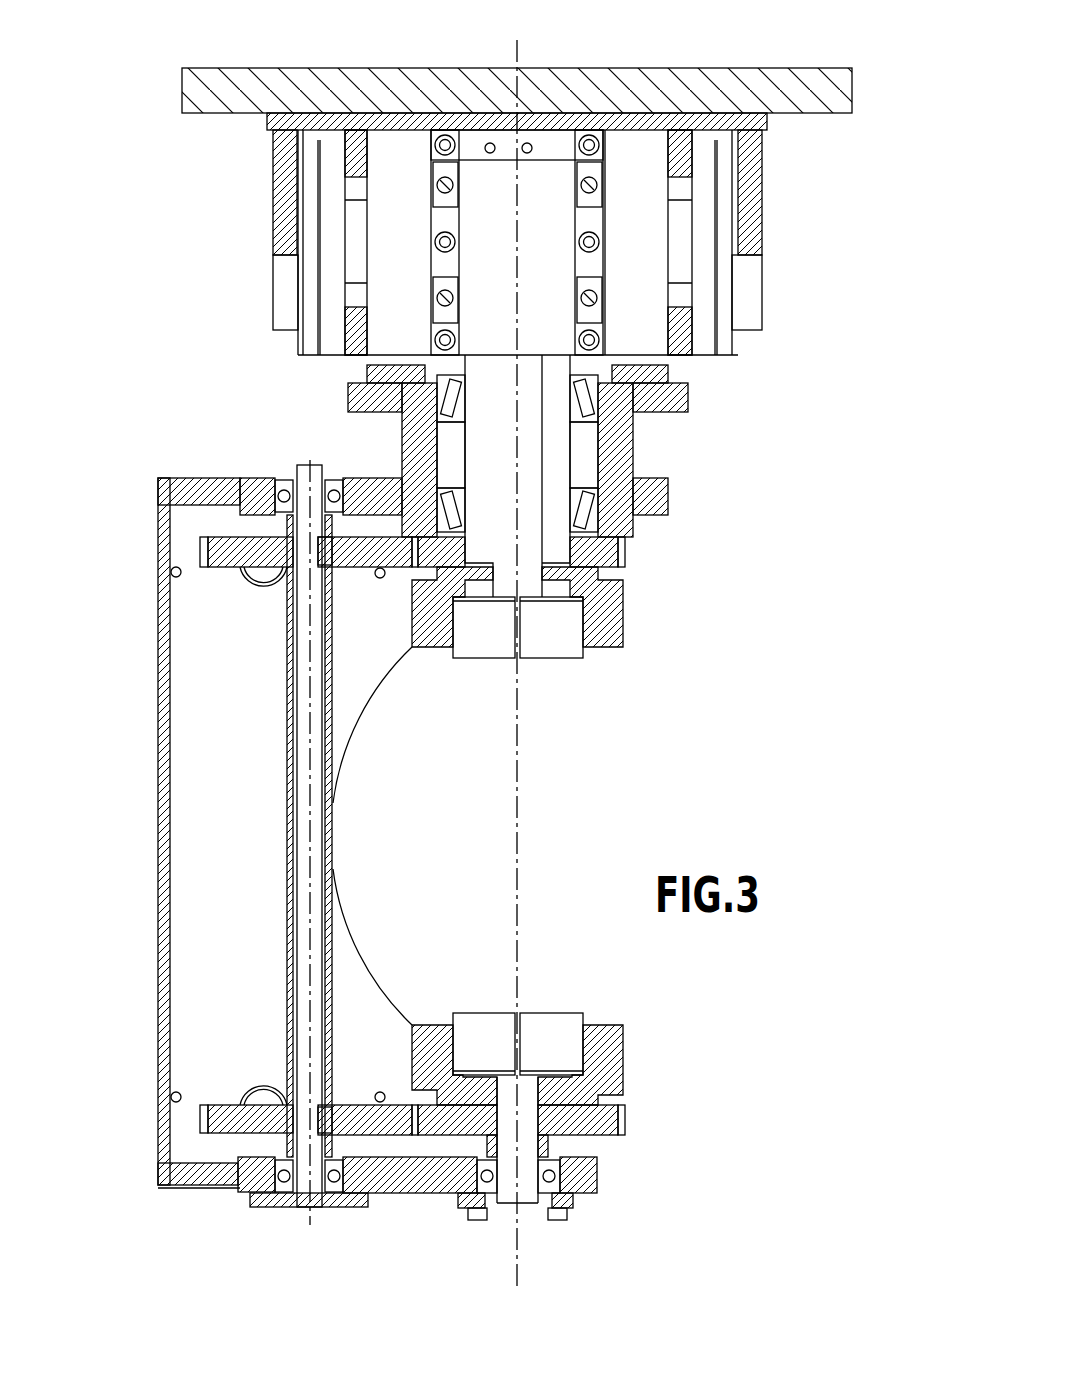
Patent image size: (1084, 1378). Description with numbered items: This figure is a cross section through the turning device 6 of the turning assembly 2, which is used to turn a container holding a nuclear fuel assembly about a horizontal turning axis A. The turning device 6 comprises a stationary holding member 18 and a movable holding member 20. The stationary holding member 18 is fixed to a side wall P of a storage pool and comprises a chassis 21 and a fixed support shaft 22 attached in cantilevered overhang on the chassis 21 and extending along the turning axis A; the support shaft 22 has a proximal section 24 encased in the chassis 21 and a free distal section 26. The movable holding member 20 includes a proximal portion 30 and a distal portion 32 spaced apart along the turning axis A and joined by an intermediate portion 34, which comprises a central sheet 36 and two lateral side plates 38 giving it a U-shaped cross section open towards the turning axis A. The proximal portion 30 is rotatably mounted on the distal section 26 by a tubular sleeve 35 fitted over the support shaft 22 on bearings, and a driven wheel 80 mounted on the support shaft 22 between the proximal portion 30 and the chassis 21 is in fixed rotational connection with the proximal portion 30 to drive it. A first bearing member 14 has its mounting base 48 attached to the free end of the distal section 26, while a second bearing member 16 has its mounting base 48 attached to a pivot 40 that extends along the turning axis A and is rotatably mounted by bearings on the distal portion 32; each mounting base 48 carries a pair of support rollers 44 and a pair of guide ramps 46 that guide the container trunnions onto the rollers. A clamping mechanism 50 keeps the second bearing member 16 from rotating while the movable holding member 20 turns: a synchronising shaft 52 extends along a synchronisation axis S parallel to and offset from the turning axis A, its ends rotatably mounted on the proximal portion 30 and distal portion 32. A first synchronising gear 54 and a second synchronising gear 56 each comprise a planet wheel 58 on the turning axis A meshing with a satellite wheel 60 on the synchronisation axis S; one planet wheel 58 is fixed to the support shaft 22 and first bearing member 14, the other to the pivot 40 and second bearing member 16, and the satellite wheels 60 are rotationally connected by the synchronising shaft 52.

The turning assembly 2 is at (118, 176).
The turning device 6 is at (235, 252).
The side wall P is at (224, 92).
The stationary holding member 18 is at (645, 108).
The chassis 21 is at (722, 118).
The proximal section 24 is at (552, 228).
The support shaft 22 is at (556, 300).
The driven wheel 80 is at (680, 393).
The tubular sleeve 35 is at (625, 423).
The distal section 26 is at (545, 462).
The proximal portion 30 is at (668, 500).
The first synchronising gear 54 is at (221, 528).
The satellite wheel 60 is at (220, 550).
The planet wheel 58 is at (612, 553).
The mounting base 48 is at (595, 592).
The first bearing member 14 is at (652, 630).
The synchronising shaft 52 is at (283, 678).
The guide ramps 46 is at (432, 650).
The support rollers 44 is at (478, 658).
The clamping mechanism 50 is at (272, 718).
The intermediate portion 34 is at (152, 827).
The central sheet 36 is at (170, 862).
The lateral side plates 38 is at (210, 913).
The movable holding member 20 is at (150, 995).
The second bearing member 16 is at (634, 1053).
The distal portion 32 is at (598, 1175).
The second synchronising gear 56 is at (215, 1145).
The pivot 40 is at (527, 1188).
The synchronisation axis S is at (311, 1238).
The turning axis A is at (522, 673).